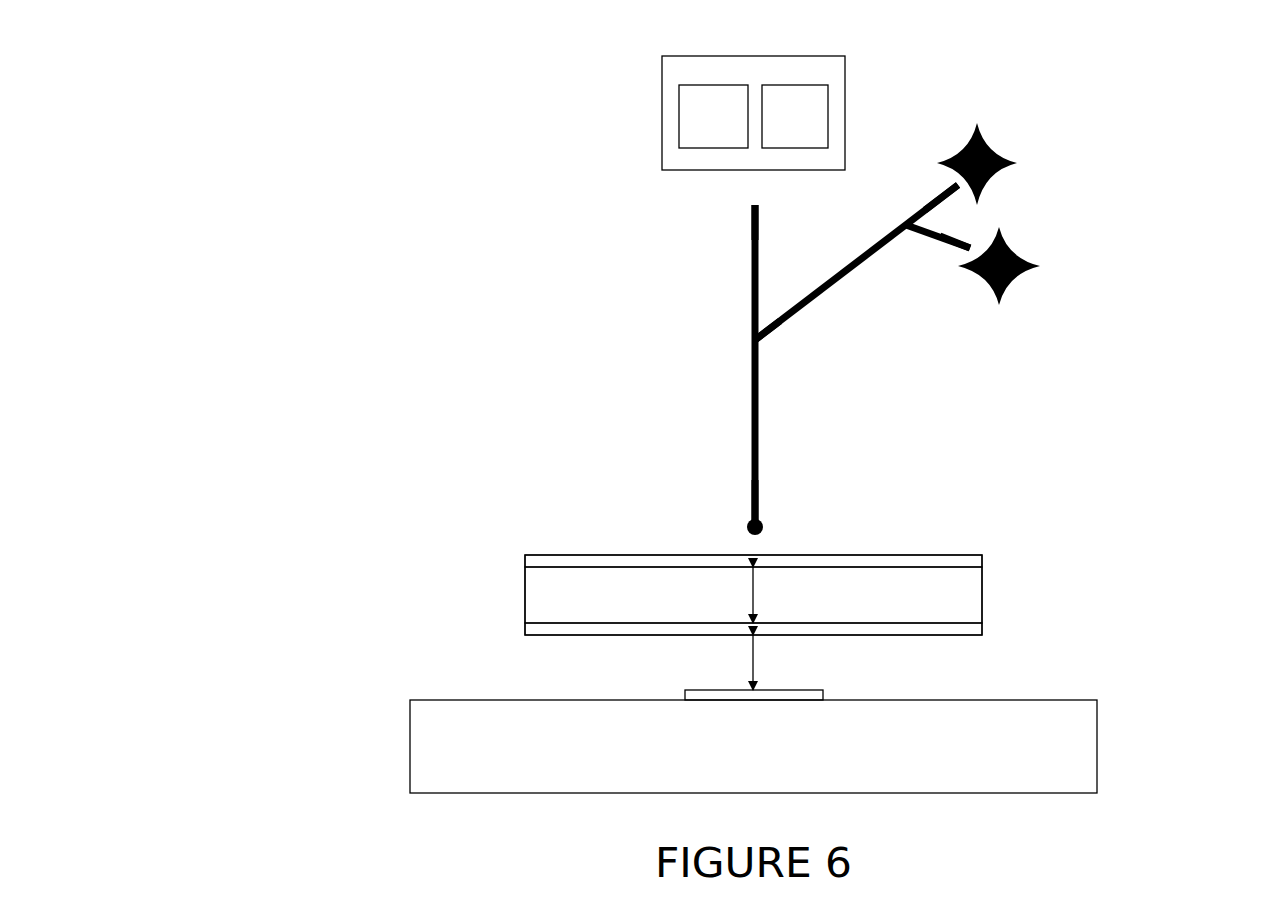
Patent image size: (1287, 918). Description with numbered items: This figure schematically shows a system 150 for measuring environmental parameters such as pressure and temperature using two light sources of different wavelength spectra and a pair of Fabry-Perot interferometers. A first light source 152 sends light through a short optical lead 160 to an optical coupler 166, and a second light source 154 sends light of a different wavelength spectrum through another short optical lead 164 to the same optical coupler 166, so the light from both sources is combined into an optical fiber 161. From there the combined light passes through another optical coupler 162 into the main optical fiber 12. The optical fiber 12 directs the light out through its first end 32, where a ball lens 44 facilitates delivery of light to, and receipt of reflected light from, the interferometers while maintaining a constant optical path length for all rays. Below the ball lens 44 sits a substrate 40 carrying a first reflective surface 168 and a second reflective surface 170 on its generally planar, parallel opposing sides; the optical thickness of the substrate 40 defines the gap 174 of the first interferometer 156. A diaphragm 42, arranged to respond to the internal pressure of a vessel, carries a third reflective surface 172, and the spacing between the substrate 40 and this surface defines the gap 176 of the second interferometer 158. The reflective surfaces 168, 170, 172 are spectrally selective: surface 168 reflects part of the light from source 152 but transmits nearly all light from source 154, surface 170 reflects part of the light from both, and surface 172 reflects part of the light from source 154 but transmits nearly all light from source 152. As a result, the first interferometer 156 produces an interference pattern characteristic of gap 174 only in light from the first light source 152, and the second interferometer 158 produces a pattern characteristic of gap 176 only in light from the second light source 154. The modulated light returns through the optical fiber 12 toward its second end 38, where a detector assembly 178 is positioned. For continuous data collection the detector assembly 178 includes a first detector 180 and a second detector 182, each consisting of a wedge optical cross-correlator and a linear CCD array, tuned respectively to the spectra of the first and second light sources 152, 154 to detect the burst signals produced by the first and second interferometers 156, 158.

The optical fiber 12 is at (758, 407).
The first end 32 is at (758, 517).
The second end 38 is at (760, 201).
The substrate 40 is at (525, 590).
The diaphragm 42 is at (1085, 735).
The ball lens 44 is at (748, 527).
The system 150 is at (445, 387).
The first light source 152 is at (998, 158).
The second light source 154 is at (1007, 280).
The first interferometer 156 is at (512, 543).
The second interferometer 158 is at (627, 668).
The short optical lead 160 is at (925, 208).
The optical fiber 161 is at (847, 272).
The optical coupler 162 is at (758, 342).
The short optical lead 164 is at (940, 247).
The optical coupler 166 is at (908, 228).
The first reflective surface 168 is at (982, 560).
The second reflective surface 170 is at (982, 630).
The third reflective surface 172 is at (823, 692).
The gap 174 is at (780, 595).
The gap 176 is at (720, 662).
The detector assembly 178 is at (662, 112).
The first detector 180 is at (713, 116).
The second detector 182 is at (795, 116).